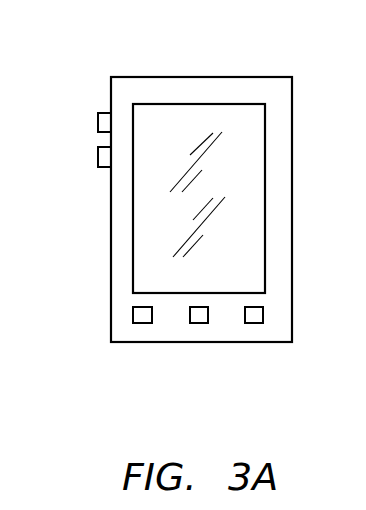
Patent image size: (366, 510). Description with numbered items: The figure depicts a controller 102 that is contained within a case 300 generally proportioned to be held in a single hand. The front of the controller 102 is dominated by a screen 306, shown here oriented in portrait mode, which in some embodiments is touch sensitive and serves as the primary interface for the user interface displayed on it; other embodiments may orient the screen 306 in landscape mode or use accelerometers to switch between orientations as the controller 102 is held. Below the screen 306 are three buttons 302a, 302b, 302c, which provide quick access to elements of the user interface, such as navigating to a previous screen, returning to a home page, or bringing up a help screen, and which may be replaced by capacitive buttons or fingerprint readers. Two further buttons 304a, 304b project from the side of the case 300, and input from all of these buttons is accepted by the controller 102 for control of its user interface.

The controller 102 is at (234, 77).
The case 300 is at (293, 147).
The button 302a is at (140, 323).
The button 302b is at (195, 323).
The button 302c is at (257, 323).
The button 304a is at (98, 123).
The button 304b is at (98, 153).
The screen 306 is at (164, 110).